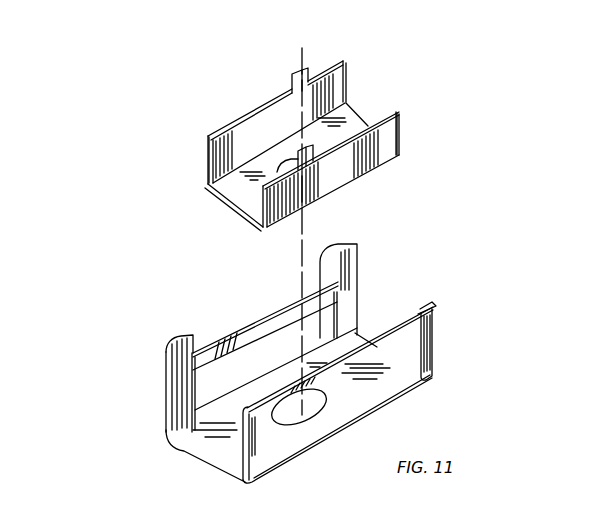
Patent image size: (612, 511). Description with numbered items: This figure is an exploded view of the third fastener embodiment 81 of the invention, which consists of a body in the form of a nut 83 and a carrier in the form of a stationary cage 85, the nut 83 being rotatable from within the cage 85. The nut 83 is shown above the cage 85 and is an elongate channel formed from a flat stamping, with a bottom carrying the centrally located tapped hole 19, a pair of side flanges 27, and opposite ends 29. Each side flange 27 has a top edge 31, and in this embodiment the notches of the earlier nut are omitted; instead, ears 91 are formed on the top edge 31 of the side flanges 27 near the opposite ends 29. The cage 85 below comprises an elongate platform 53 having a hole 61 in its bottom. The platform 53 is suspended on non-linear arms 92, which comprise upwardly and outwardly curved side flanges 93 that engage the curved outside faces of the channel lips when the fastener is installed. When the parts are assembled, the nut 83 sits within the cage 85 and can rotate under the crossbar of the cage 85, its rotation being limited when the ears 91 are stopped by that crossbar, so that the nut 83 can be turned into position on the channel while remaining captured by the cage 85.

The third embodiment fastener 81 is at (462, 203).
The nut 83 is at (357, 62).
The cage 85 is at (374, 304).
The tapped hole 19 is at (257, 182).
The side flanges 27 is at (320, 187).
The opposite ends 29 is at (207, 152).
The top edge 31 is at (237, 126).
The platform 53 is at (360, 340).
The hole 61 is at (330, 426).
The ears 91 is at (295, 68).
The non-linear arms 92 is at (158, 362).
The side flanges 93 is at (170, 385).